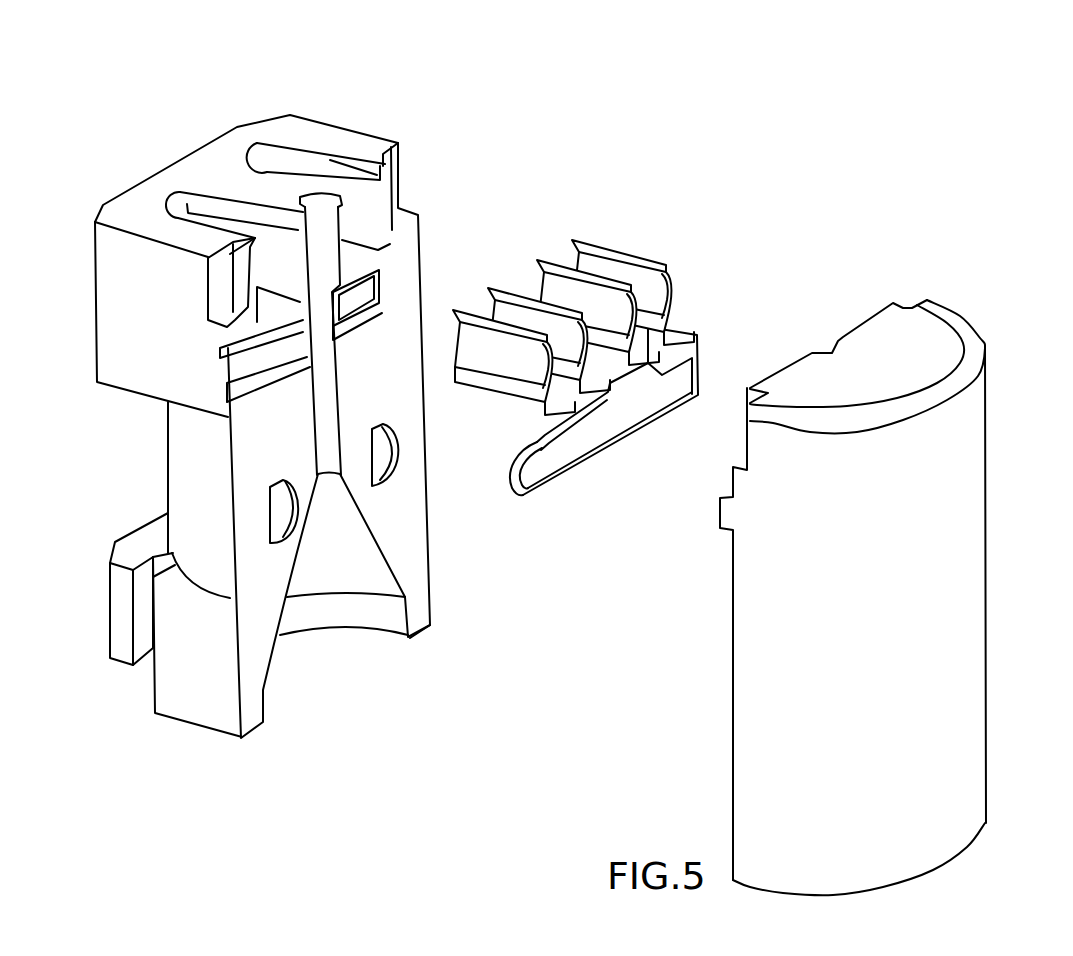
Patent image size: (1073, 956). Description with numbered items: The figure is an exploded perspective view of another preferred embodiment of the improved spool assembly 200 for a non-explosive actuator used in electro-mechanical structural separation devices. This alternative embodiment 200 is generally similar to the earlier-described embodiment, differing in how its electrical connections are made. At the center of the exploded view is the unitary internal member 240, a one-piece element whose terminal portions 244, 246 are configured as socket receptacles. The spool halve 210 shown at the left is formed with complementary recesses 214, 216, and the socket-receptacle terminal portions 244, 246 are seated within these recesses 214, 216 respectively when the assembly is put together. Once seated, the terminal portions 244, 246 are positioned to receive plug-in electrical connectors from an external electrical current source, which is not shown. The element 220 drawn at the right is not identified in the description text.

The improved spool assembly 200 is at (808, 220).
The spool halve 210 is at (175, 458).
The complementary recess 214 is at (203, 230).
The complementary recess 216 is at (293, 177).
The canister 220 is at (938, 630).
The unitary internal member 240 is at (700, 318).
The terminal portion 244 is at (462, 308).
The terminal portion 246 is at (592, 268).